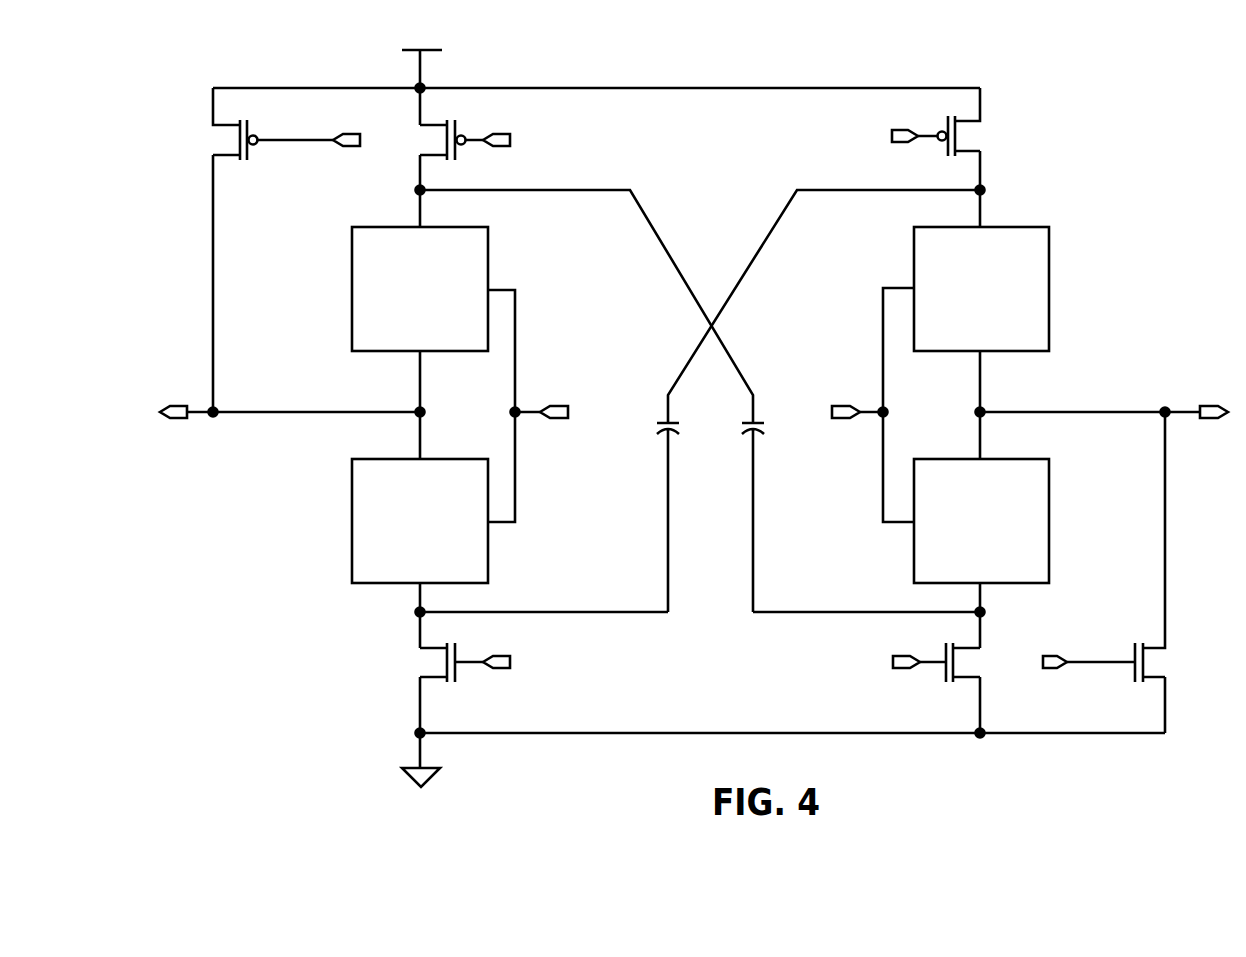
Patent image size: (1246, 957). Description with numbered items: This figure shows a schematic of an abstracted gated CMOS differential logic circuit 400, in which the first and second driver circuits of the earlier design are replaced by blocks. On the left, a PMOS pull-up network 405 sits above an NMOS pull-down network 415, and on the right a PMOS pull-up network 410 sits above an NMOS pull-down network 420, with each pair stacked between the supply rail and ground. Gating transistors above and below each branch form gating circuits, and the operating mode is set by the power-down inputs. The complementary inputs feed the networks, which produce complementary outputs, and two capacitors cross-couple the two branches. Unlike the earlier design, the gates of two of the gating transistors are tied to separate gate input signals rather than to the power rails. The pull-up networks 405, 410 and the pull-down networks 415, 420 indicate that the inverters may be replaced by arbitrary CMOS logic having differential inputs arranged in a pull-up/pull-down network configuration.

The abstracted gated CMOS differential logic circuit 400 is at (1196, 66).
The PMOS pull-up network 405 is at (403, 325).
The PMOS pull-up network 410 is at (964, 325).
The NMOS pull-down network 415 is at (403, 557).
The NMOS pull-down network 420 is at (964, 557).